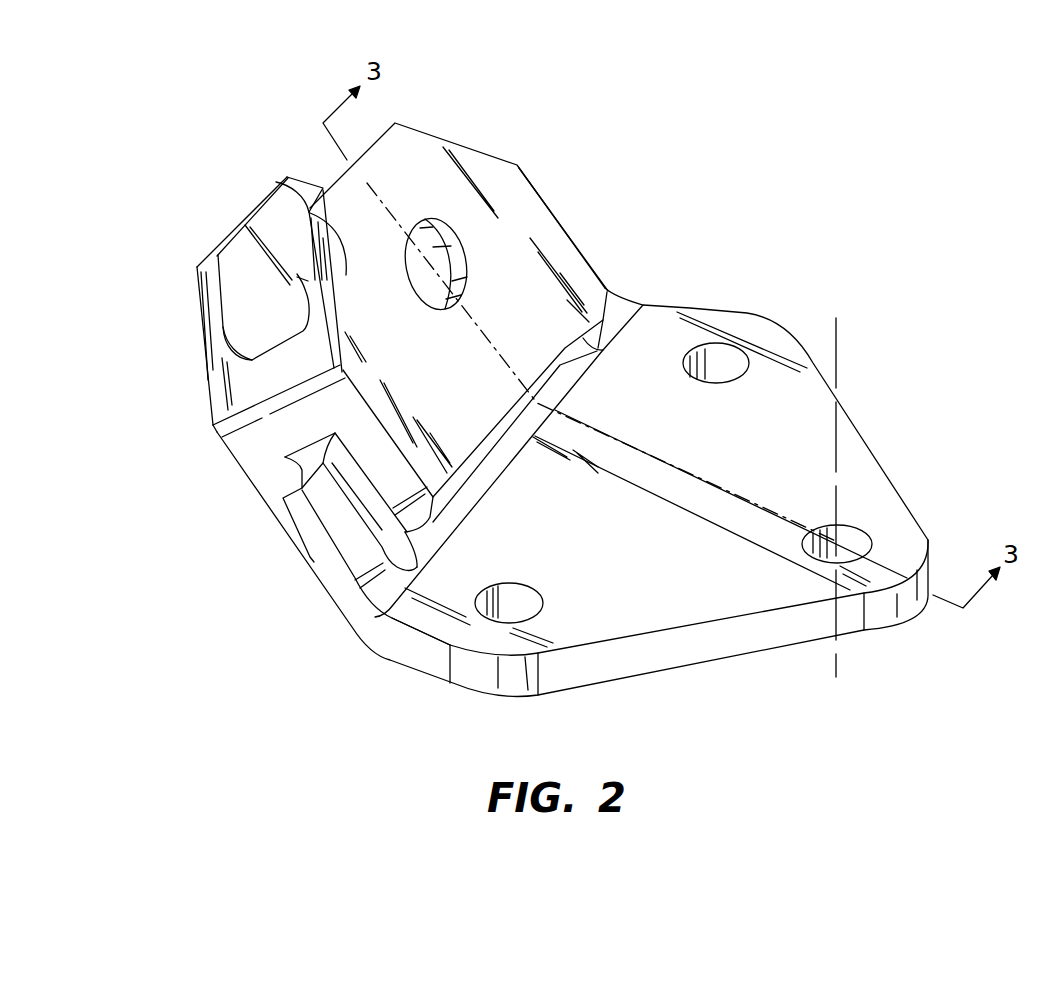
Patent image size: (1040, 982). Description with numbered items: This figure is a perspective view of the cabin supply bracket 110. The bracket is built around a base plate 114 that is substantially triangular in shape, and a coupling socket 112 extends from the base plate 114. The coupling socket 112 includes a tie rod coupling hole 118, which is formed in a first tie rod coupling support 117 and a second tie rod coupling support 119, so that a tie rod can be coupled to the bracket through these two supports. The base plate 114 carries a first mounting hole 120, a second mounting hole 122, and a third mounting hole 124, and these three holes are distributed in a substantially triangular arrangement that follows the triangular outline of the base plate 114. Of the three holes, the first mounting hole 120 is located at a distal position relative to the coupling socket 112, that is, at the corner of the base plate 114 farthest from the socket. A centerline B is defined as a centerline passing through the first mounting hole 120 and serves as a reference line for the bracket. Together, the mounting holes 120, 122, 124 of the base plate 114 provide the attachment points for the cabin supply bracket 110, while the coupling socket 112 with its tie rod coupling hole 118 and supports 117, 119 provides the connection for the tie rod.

The cabin supply bracket 110 is at (874, 187).
The coupling socket 112 is at (518, 200).
The base plate 114 is at (900, 507).
The first tie rod coupling support 117 is at (290, 193).
The tie rod coupling hole 118 is at (428, 257).
The second tie rod coupling support 119 is at (230, 292).
The first mounting hole 120 is at (847, 533).
The second mounting hole 122 is at (717, 357).
The third mounting hole 124 is at (520, 603).